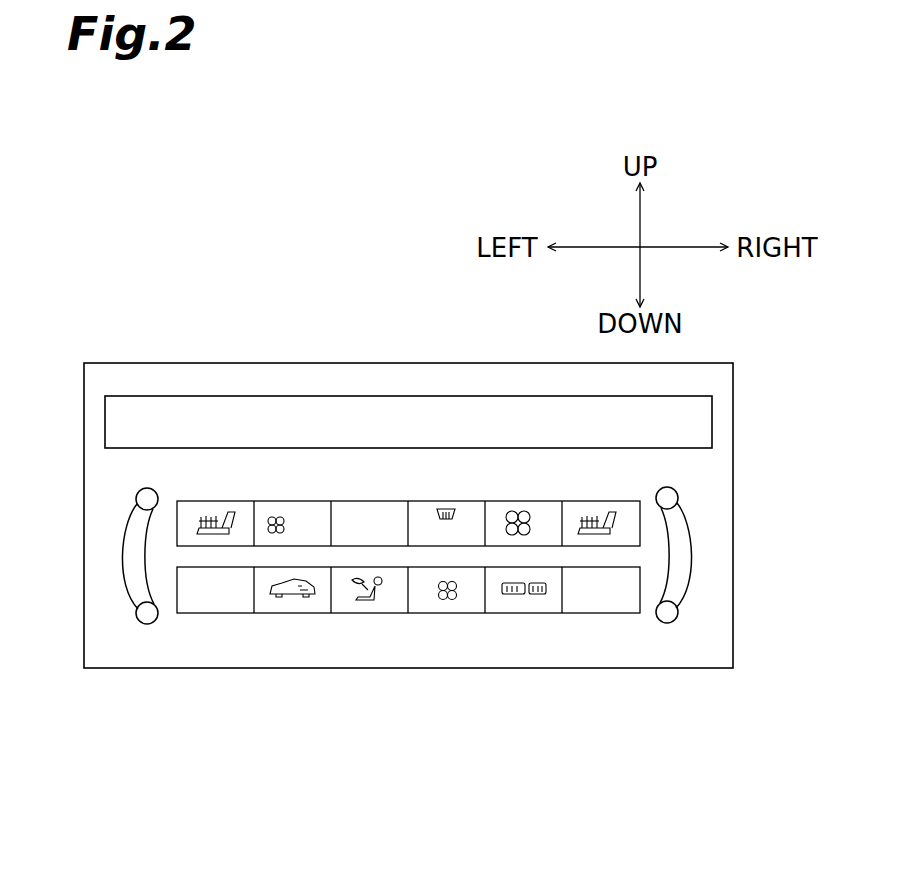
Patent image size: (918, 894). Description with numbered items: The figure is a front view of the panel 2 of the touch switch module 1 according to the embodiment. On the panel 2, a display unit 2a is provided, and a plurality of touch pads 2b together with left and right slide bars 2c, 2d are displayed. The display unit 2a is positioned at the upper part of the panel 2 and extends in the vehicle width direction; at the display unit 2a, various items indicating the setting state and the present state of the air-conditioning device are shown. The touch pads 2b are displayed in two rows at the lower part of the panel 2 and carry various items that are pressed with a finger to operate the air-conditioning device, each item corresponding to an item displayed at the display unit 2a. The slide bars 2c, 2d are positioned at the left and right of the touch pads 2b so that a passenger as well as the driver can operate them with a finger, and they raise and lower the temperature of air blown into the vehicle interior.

The touch switch module 1 is at (297, 311).
The panel 2 is at (163, 381).
The display unit 2a is at (118, 421).
The touch pads 2b is at (283, 638).
The left slide bar 2c is at (143, 633).
The right slide bar 2d is at (668, 632).